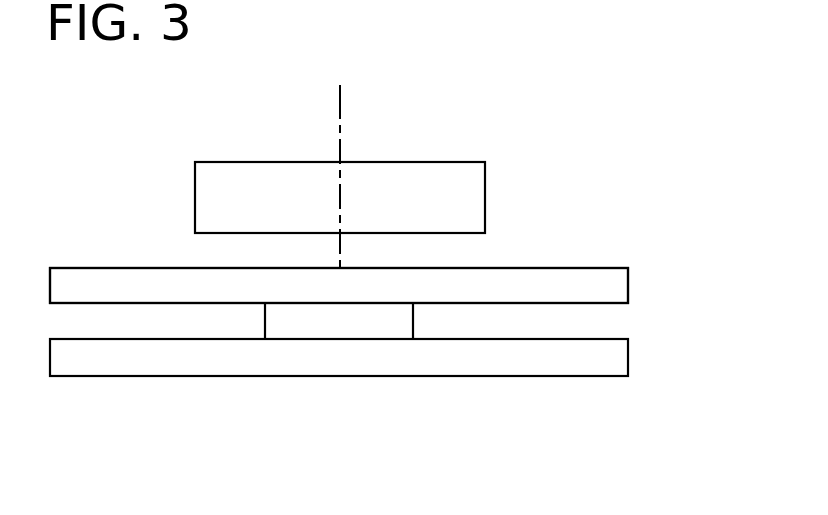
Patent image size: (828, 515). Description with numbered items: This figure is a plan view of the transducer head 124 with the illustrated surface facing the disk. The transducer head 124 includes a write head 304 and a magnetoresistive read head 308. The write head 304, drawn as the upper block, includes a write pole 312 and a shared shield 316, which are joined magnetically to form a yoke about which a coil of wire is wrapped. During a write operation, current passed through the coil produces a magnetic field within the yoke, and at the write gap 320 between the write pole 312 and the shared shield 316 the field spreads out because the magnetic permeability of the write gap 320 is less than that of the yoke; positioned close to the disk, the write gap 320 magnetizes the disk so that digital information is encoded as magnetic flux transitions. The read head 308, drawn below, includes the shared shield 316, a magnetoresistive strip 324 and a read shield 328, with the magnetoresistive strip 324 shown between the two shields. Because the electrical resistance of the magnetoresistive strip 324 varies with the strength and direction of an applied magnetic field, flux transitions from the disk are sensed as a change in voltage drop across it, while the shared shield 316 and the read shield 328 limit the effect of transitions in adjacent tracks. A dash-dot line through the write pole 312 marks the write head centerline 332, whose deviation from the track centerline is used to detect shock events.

The transducer head 124 is at (356, 64).
The write head 304 is at (494, 159).
The magnetoresistive read head 308 is at (400, 382).
The write pole 312 is at (228, 161).
The shared shield 316 is at (630, 287).
The write gap 320 is at (232, 253).
The magnetoresistive strip 324 is at (305, 331).
The read shield 328 is at (630, 358).
The write head centerline 332 is at (341, 118).